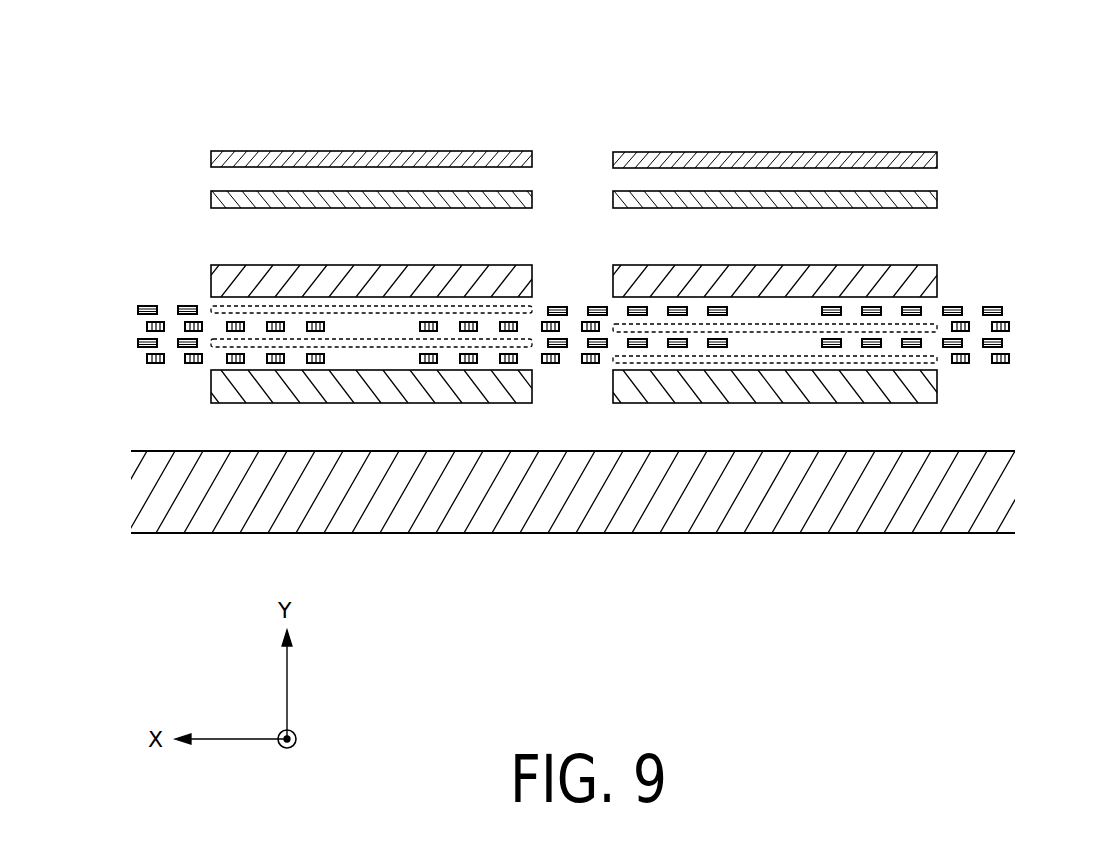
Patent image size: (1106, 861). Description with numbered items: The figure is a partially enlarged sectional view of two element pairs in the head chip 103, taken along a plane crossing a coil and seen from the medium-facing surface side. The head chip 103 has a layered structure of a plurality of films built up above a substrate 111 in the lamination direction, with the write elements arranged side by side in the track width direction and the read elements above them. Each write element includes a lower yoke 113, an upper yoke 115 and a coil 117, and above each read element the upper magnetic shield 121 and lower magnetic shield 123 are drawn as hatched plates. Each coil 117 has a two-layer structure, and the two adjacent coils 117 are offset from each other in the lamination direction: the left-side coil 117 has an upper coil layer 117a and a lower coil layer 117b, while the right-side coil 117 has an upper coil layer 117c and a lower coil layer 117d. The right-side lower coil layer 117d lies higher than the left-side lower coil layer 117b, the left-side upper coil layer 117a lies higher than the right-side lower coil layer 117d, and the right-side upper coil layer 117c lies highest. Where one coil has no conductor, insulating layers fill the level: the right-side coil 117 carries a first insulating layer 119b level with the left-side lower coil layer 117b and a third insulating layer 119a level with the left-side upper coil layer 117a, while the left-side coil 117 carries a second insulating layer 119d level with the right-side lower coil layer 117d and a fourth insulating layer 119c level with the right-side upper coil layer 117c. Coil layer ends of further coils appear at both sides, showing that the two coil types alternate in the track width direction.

The head chip 103 is at (142, 50).
The substrate 111 is at (568, 533).
The lower yoke 113 is at (211, 400).
The upper yoke 115 is at (211, 265).
The coil 117 is at (570, 331).
The upper coil layer 117a is at (326, 327).
The lower coil layer 117b is at (327, 359).
The upper coil layer 117c is at (727, 311).
The lower coil layer 117d is at (727, 343).
The third insulating layer 119a is at (662, 325).
The first insulating layer 119b is at (780, 363).
The fourth insulating layer 119c is at (258, 307).
The second insulating layer 119d is at (387, 348).
The upper magnetic shield 121 is at (291, 151).
The lower magnetic shield 123 is at (440, 191).